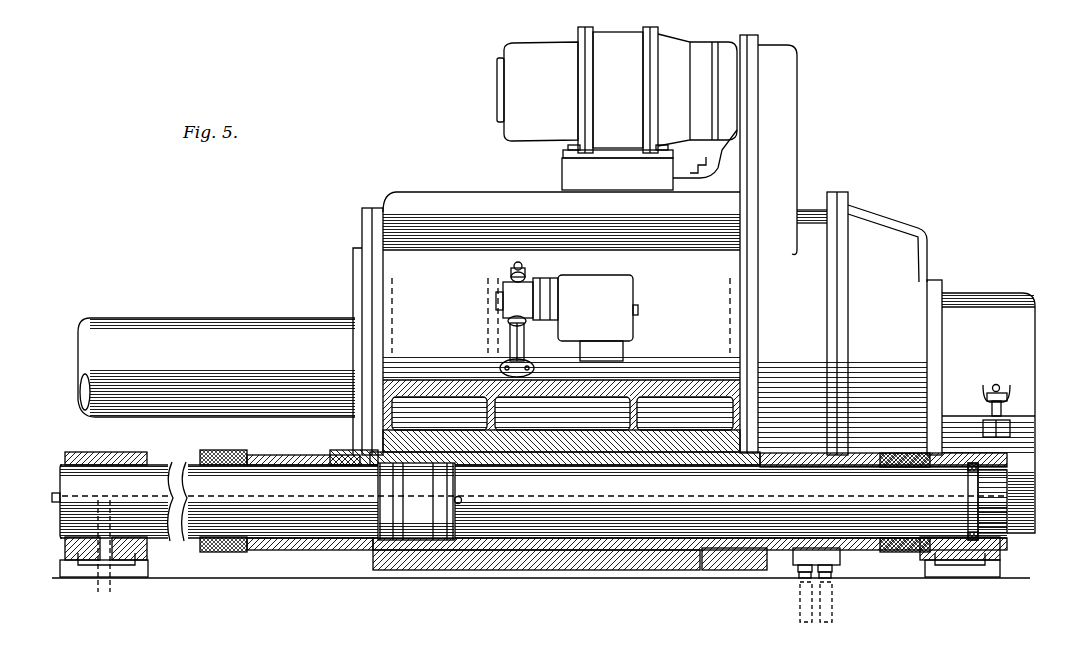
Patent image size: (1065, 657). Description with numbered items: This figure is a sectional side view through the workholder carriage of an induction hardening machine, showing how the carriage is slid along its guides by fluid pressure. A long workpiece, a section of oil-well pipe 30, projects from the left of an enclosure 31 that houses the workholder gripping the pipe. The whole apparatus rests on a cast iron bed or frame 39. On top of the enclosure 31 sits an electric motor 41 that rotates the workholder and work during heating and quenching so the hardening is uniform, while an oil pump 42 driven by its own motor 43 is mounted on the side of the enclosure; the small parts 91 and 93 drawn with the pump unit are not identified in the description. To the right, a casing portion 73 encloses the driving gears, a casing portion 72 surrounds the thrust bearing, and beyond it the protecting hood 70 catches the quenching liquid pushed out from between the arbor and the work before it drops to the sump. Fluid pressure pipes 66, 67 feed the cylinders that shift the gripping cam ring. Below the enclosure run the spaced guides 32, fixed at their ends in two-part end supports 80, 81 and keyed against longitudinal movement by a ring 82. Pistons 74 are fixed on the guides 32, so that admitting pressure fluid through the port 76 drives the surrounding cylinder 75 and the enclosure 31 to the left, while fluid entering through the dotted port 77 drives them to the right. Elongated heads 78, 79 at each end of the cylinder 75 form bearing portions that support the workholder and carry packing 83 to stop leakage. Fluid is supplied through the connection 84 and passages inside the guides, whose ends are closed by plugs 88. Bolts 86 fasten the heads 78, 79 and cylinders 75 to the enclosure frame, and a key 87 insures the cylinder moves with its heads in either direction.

The pipe 30 is at (230, 332).
The enclosure 31 is at (443, 385).
The guides 32 is at (186, 472).
The bed or frame 39 is at (290, 578).
The electric motor 41 is at (628, 101).
The oil pump 42 is at (528, 308).
The motor 43 is at (604, 315).
The fluid pressure pipe 66 is at (802, 580).
The fluid pressure pipe 67 is at (834, 578).
The protecting hood 70 is at (983, 303).
The casing portion 72 is at (915, 226).
The casing portion 73 is at (790, 80).
The pistons 74 is at (338, 460).
The cylinders 75 is at (655, 550).
The port 76 is at (475, 491).
The port 77 is at (380, 494).
The elongated head 78 is at (814, 465).
The elongated head 79 is at (290, 466).
The end support 80 is at (1000, 556).
The end support 81 is at (120, 458).
The ring 82 is at (970, 470).
The packing 83 is at (230, 465).
The connection 84 is at (110, 557).
The bolts 86 is at (793, 560).
The key 87 is at (726, 570).
The plugs 88 is at (52, 497).
The fitting 91 is at (526, 276).
The rod 93 is at (508, 340).